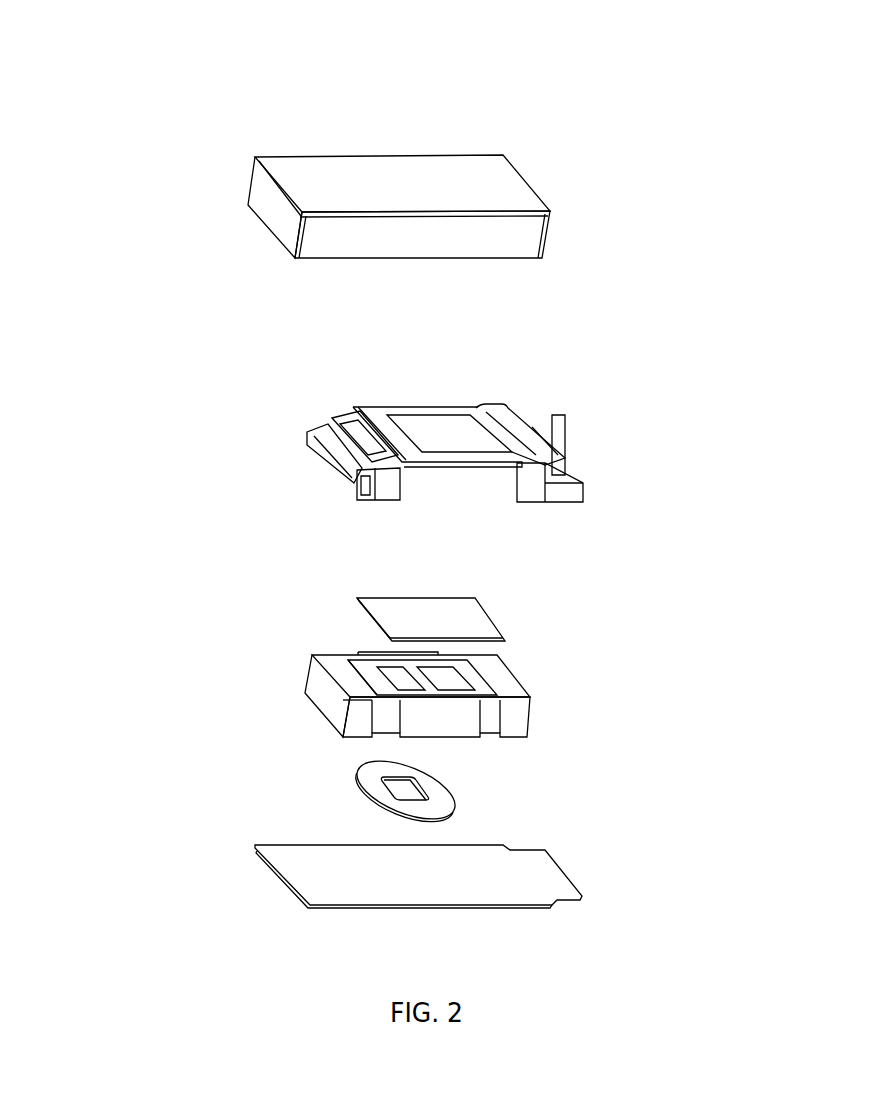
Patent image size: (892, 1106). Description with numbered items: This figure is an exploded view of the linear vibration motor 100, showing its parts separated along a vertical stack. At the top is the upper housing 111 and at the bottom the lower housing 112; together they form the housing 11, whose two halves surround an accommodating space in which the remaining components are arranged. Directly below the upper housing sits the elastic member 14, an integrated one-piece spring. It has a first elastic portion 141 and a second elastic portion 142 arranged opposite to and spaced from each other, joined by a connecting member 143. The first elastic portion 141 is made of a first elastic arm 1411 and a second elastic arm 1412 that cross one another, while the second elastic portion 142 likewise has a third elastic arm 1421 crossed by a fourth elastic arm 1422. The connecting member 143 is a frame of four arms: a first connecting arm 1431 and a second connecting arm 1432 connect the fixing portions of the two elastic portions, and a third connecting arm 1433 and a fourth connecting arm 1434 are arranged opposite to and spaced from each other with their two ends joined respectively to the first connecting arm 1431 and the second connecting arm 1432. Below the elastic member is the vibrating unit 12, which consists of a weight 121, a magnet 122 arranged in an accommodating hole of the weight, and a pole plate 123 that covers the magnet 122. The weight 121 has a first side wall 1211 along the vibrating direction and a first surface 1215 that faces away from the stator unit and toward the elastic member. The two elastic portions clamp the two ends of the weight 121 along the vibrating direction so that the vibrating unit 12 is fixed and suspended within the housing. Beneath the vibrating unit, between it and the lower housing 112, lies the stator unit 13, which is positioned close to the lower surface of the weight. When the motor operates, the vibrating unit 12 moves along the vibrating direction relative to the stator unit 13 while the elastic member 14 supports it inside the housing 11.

The linear vibration motor 100 is at (460, 44).
The housing 11 is at (80, 802).
The upper housing 111 is at (262, 201).
The lower housing 112 is at (307, 867).
The vibrating unit 12 is at (762, 620).
The weight 121 is at (537, 724).
The first side wall 1211 is at (358, 722).
The first surface 1215 is at (343, 670).
The magnet 122 is at (443, 680).
The pole plate 123 is at (475, 627).
The stator unit 13 is at (435, 792).
The elastic member 14 is at (755, 332).
The first elastic portion 141 is at (693, 404).
The first elastic arm 1411 is at (555, 438).
The second elastic arm 1412 is at (575, 478).
The second elastic portion 142 is at (693, 511).
The third elastic arm 1421 is at (382, 475).
The fourth elastic arm 1422 is at (362, 490).
The connecting member 143 is at (693, 284).
The first connecting arm 1431 is at (508, 433).
The second connecting arm 1432 is at (385, 437).
The third connecting arm 1433 is at (442, 412).
The fourth connecting arm 1434 is at (490, 420).